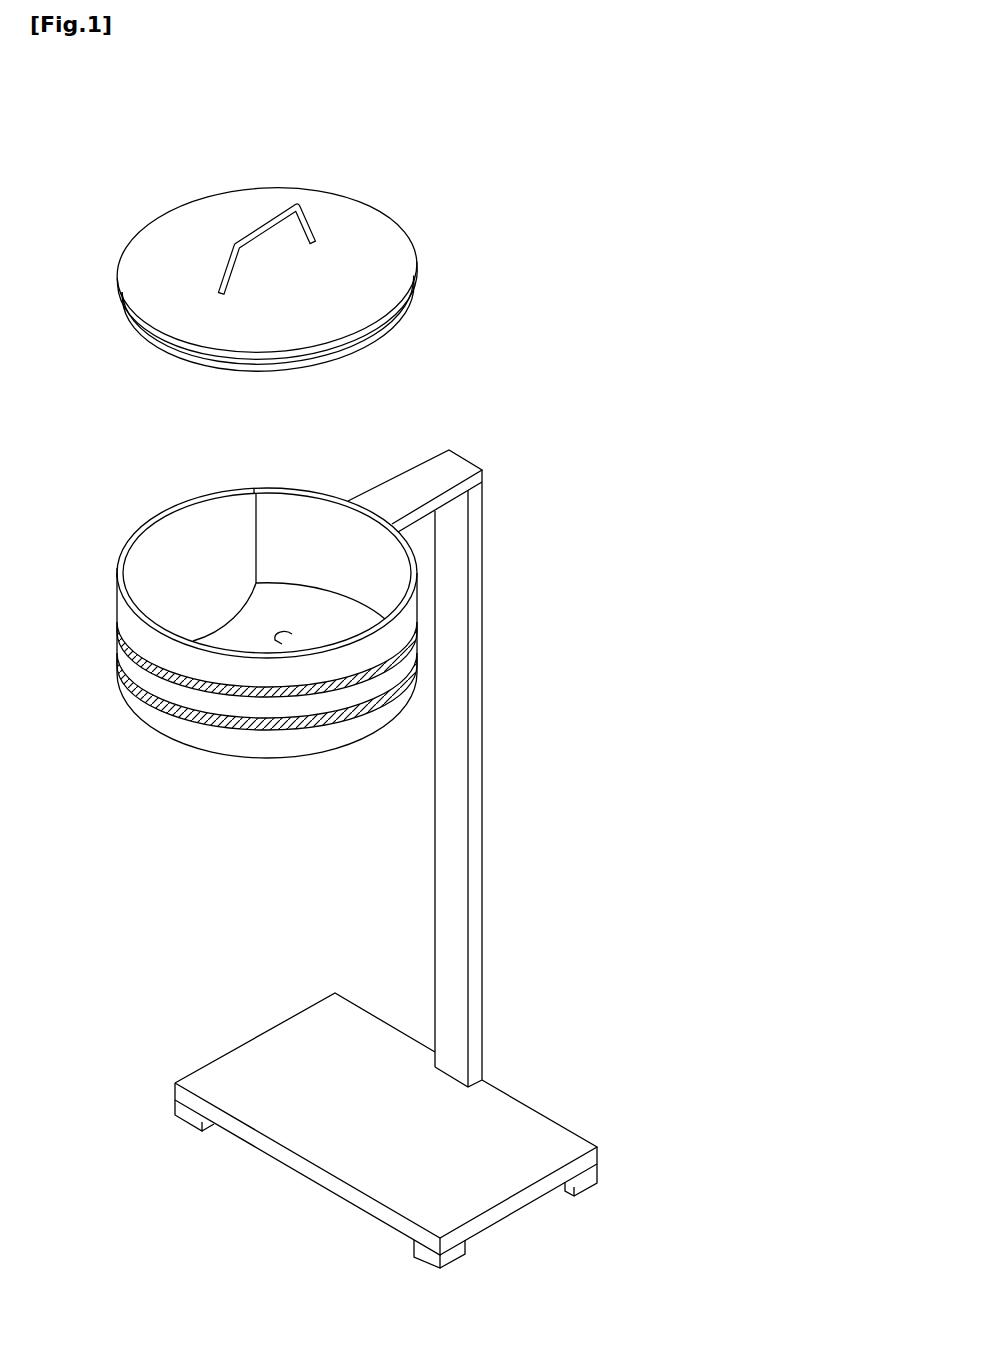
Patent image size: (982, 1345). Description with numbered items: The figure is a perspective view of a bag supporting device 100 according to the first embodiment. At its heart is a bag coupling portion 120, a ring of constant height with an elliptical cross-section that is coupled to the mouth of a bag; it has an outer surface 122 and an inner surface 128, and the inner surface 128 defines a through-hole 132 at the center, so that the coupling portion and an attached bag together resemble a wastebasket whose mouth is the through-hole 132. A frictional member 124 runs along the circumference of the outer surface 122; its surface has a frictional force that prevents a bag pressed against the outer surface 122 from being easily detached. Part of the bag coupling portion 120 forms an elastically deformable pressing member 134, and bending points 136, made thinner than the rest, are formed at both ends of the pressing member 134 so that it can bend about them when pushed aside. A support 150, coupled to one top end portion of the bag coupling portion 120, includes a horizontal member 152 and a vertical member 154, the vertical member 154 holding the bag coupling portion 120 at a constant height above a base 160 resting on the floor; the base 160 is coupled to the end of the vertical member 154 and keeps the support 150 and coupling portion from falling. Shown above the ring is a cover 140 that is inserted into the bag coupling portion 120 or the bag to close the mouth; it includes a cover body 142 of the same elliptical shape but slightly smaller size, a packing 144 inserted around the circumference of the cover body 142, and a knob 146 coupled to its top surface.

The bag supporting device 100 is at (530, 148).
The bag coupling portion 120 is at (127, 731).
The outer surface 122 is at (272, 748).
The frictional member 124 is at (142, 652).
The inner surface 128 is at (303, 520).
The through-hole 132 is at (292, 633).
The pressing member 134 is at (192, 547).
The bending points 136 is at (255, 490).
The cover 140 is at (131, 342).
The cover body 142 is at (143, 260).
The packing 144 is at (202, 352).
The knob 146 is at (265, 225).
The support 150 is at (522, 808).
The horizontal member 152 is at (428, 478).
The vertical member 154 is at (478, 722).
The base 160 is at (340, 1140).